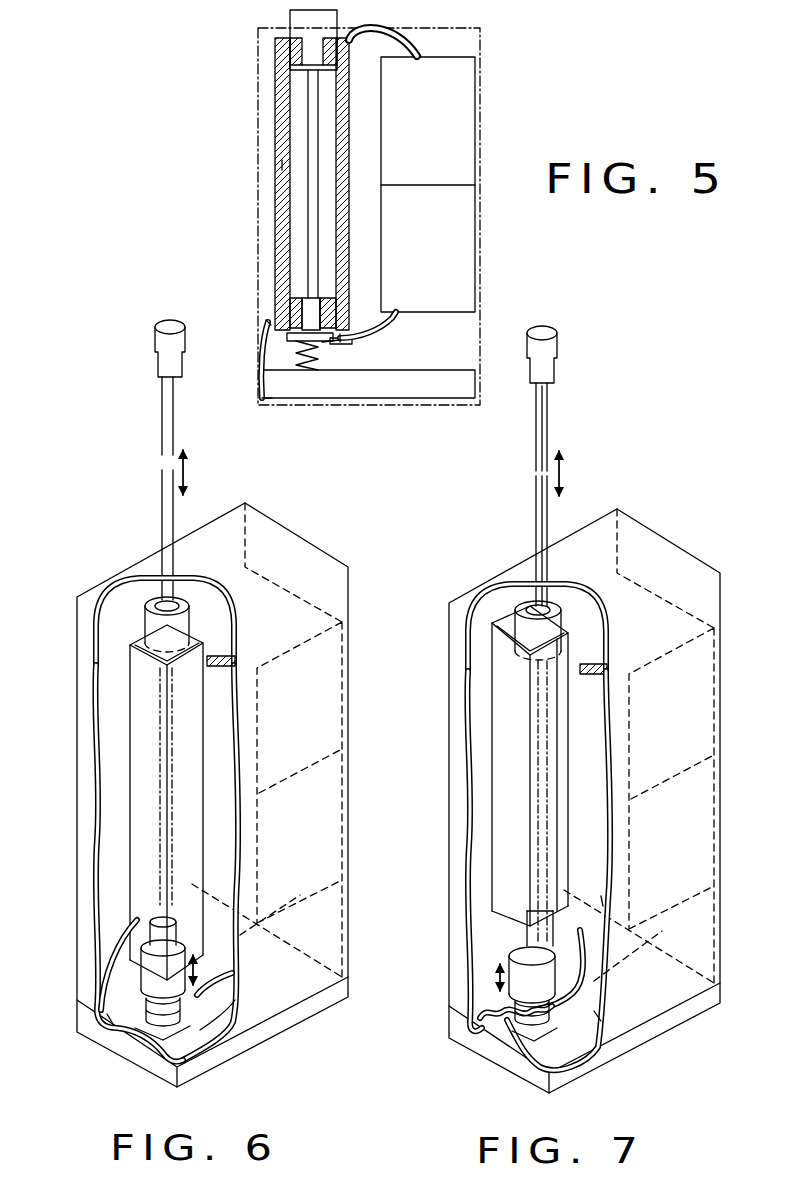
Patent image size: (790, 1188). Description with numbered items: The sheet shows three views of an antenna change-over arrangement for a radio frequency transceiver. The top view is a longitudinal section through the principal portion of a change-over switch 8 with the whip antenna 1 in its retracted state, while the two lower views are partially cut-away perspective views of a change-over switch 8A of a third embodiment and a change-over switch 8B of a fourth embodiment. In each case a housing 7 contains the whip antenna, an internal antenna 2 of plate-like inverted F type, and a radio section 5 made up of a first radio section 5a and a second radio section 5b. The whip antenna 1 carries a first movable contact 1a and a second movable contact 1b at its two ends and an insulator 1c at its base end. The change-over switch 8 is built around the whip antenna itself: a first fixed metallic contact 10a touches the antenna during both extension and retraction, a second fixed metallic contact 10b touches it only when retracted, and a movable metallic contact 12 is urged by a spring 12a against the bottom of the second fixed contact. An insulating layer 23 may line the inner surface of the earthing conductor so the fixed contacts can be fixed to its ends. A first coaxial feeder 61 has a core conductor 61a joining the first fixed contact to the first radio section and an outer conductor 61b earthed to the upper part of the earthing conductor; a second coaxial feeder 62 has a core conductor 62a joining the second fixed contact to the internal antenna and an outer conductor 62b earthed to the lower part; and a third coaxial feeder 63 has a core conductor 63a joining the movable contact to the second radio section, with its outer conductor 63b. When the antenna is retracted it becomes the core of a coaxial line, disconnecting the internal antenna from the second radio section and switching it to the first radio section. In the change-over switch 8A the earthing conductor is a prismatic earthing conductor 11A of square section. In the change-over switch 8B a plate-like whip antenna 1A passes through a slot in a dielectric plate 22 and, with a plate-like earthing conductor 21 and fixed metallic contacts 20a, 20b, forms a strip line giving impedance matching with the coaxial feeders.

In FIG. 5, the whip antenna 1 is at (305, 140).
In FIG. 6, the whip antenna 1 is at (158, 436).
In FIG. 7, the plate-like whip antenna 1A is at (479, 662).
In FIG. 5, the first movable contact 1a is at (310, 40).
In FIG. 6, the first movable contact 1a is at (158, 372).
In FIG. 7, the first movable contact 1a is at (565, 354).
In FIG. 5, the second movable contact 1b is at (302, 305).
In FIG. 6, the second movable contact 1b is at (150, 620).
In FIG. 7, the second movable contact 1b is at (487, 739).
In FIG. 5, the insulator 1c is at (337, 305).
In FIG. 5, the internal antenna 2 is at (315, 383).
In FIG. 6, the internal antenna 2 is at (77, 1012).
In FIG. 7, the internal antenna 2 is at (571, 1038).
In FIG. 5, the radio section 5 is at (470, 54).
In FIG. 6, the radio section 5 is at (340, 673).
In FIG. 7, the radio section 5 is at (656, 798).
In FIG. 5, the first radio section 5a is at (465, 153).
In FIG. 6, the first radio section 5a is at (338, 730).
In FIG. 7, the first radio section 5a is at (692, 714).
In FIG. 5, the second radio section 5b is at (466, 242).
In FIG. 6, the second radio section 5b is at (333, 848).
In FIG. 7, the second radio section 5b is at (692, 816).
In FIG. 5, the housing 7 is at (482, 113).
In FIG. 6, the housing 7 is at (333, 562).
In FIG. 7, the housing 7 is at (584, 798).
In FIG. 5, the change-over switch 8 is at (272, 90).
In FIG. 6, the change-over switch 8A is at (122, 747).
In FIG. 7, the change-over switch 8B is at (447, 755).
In FIG. 5, the first fixed metallic contact 10a is at (282, 50).
In FIG. 6, the first fixed metallic contact 10a is at (140, 622).
In FIG. 5, the second fixed metallic contact 10b is at (290, 310).
In FIG. 6, the second fixed metallic contact 10b is at (195, 930).
In FIG. 6, the prismatic earthing conductor 11A is at (135, 682).
In FIG. 5, the movable metallic contact 12 is at (300, 343).
In FIG. 6, the movable metallic contact 12 is at (142, 1012).
In FIG. 7, the movable metallic contact 12 is at (476, 994).
In FIG. 5, the spring 12a is at (312, 345).
In FIG. 6, the spring 12a is at (190, 1025).
In FIG. 7, the spring 12a is at (513, 1066).
In FIG. 7, the first fixed metallic contact 20a is at (482, 612).
In FIG. 7, the second fixed metallic contact 20b is at (477, 960).
In FIG. 7, the plate-like earthing conductor 21 is at (612, 775).
In FIG. 7, the dielectric plate 22 is at (486, 766).
In FIG. 5, the insulating layer 23 is at (292, 165).
In FIG. 5, the first coaxial feeder 61 is at (410, 44).
In FIG. 6, the first coaxial feeder 61 is at (222, 670).
In FIG. 7, the first coaxial feeder 61 is at (568, 644).
In FIG. 5, the core conductor 61a is at (362, 24).
In FIG. 6, the core conductor 61a is at (216, 598).
In FIG. 7, the core conductor 61a is at (580, 569).
In FIG. 5, the outer conductor 61b is at (388, 40).
In FIG. 6, the outer conductor 61b is at (217, 676).
In FIG. 7, the outer conductor 61b is at (630, 703).
In FIG. 5, the second coaxial feeder 62 is at (264, 335).
In FIG. 6, the second coaxial feeder 62 is at (112, 918).
In FIG. 7, the second coaxial feeder 62 is at (529, 895).
In FIG. 5, the core conductor 62a is at (268, 378).
In FIG. 6, the core conductor 62a is at (123, 1036).
In FIG. 7, the core conductor 62a is at (632, 884).
In FIG. 5, the outer conductor 62b is at (266, 350).
In FIG. 6, the outer conductor 62b is at (108, 952).
In FIG. 7, the outer conductor 62b is at (563, 1050).
In FIG. 5, the third coaxial feeder 63 is at (392, 318).
In FIG. 6, the third coaxial feeder 63 is at (262, 942).
In FIG. 7, the third coaxial feeder 63 is at (626, 870).
In FIG. 5, the core conductor 63a is at (325, 342).
In FIG. 6, the core conductor 63a is at (238, 1030).
In FIG. 7, the core conductor 63a is at (604, 969).
In FIG. 5, the outer conductor 63b is at (372, 343).
In FIG. 6, the outer conductor 63b is at (215, 970).
In FIG. 7, the outer conductor 63b is at (648, 1035).